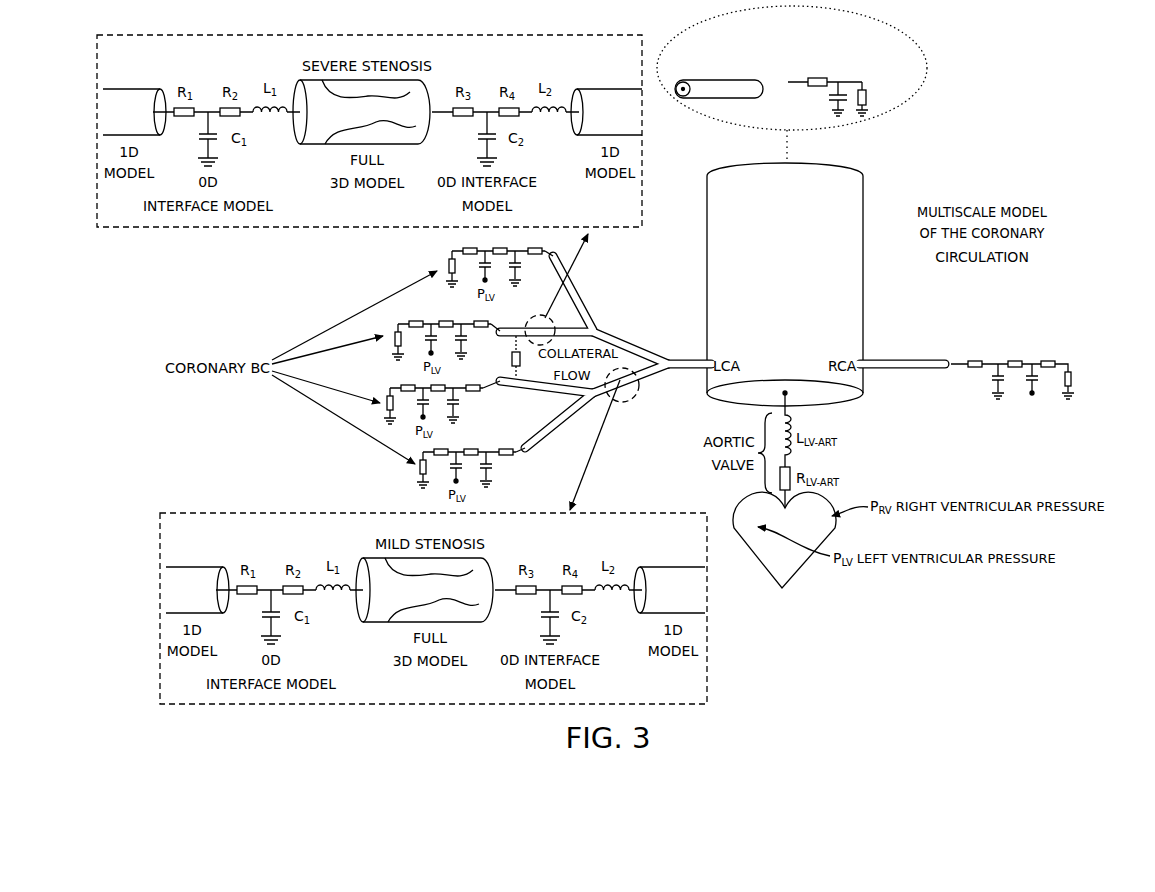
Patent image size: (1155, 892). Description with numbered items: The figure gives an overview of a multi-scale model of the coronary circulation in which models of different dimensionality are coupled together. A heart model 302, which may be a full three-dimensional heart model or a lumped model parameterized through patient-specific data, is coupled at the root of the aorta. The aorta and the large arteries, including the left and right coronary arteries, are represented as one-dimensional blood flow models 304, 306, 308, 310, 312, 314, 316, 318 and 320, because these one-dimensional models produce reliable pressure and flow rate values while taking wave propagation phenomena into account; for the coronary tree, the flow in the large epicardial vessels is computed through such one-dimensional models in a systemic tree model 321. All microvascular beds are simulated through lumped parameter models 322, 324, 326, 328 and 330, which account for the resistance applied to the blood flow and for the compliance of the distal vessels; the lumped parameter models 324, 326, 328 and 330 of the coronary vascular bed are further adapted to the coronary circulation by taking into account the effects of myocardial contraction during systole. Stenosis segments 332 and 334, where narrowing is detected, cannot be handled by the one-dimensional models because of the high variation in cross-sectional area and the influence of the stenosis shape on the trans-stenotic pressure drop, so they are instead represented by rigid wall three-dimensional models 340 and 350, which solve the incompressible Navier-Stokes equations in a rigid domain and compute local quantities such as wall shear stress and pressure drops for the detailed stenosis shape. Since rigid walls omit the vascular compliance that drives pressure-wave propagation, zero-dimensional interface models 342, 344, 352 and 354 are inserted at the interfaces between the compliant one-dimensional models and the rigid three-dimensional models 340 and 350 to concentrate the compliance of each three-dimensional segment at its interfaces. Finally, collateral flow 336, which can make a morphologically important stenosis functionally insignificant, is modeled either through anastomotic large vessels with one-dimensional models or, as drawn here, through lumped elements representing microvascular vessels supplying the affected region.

The heart model 302 is at (755, 578).
The 1D blood flow model 304 is at (866, 196).
The 1D blood flow model 306 is at (912, 351).
The 1D blood flow model 308 is at (700, 357).
The 1D blood flow model 310 is at (637, 345).
The 1D blood flow model 312 is at (657, 374).
The 1D blood flow model 314 is at (578, 292).
The 1D blood flow model 316 is at (519, 327).
The 1D blood flow model 318 is at (524, 389).
The 1D blood flow model 320 is at (540, 441).
The systemic tree model 321 is at (928, 59).
The lumped parameter model 322 is at (1015, 352).
The lumped parameter model 324 is at (360, 312).
The lumped parameter model 326 is at (318, 351).
The lumped parameter model 328 is at (321, 386).
The lumped parameter model 330 is at (360, 431).
The stenosis segment 332 is at (556, 320).
The stenosis segment 334 is at (632, 403).
The collateral flow 336 is at (511, 359).
The rigid wall 3D model 340 is at (323, 147).
The 0D interface model 342 is at (208, 101).
The 0D interface model 344 is at (487, 101).
The rigid wall 3D model 350 is at (386, 625).
The 0D interface model 352 is at (271, 579).
The 0D interface model 354 is at (550, 579).